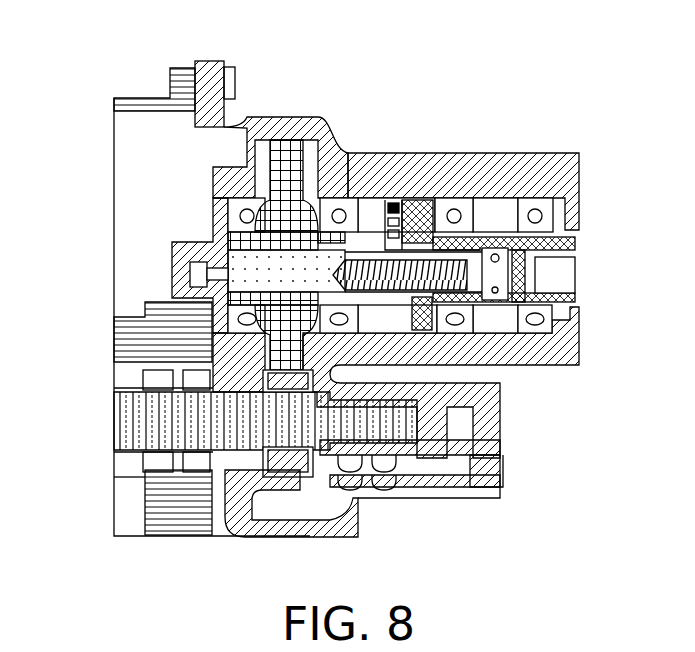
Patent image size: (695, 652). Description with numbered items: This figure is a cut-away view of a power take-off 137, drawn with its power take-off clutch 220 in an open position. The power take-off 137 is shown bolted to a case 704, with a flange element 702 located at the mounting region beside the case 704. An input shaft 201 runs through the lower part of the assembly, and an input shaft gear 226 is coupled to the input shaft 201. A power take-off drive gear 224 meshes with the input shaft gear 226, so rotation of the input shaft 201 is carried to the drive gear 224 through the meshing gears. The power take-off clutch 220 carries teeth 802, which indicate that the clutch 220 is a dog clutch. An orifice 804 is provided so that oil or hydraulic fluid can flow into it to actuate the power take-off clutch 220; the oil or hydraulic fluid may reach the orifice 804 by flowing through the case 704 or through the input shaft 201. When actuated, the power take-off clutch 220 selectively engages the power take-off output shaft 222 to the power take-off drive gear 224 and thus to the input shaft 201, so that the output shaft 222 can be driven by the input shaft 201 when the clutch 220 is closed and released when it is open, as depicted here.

The power take-off 137 is at (528, 140).
The input shaft 201 is at (130, 431).
The power take-off clutch 220 is at (404, 193).
The power take-off output shaft 222 is at (568, 247).
The power take-off drive gear 224 is at (300, 143).
The input shaft gear 226 is at (307, 484).
The flange ring 702 is at (228, 72).
The case 704 is at (172, 68).
The teeth 802 is at (398, 200).
The orifice 804 is at (195, 272).